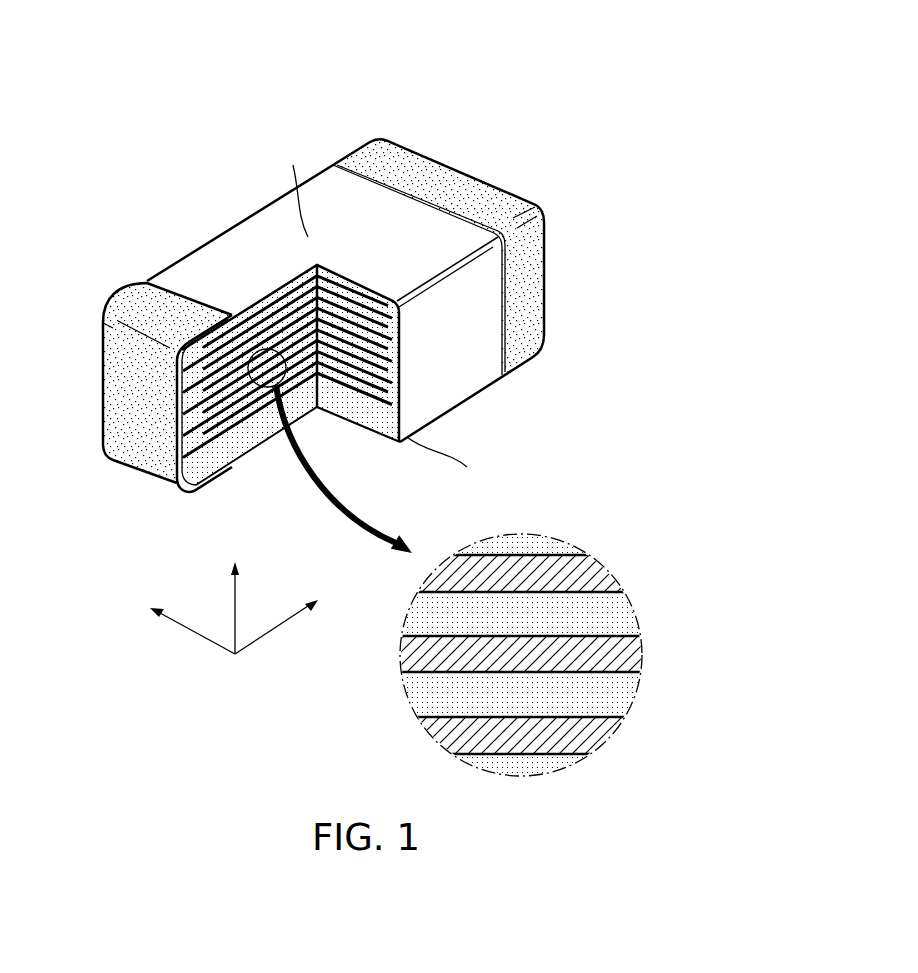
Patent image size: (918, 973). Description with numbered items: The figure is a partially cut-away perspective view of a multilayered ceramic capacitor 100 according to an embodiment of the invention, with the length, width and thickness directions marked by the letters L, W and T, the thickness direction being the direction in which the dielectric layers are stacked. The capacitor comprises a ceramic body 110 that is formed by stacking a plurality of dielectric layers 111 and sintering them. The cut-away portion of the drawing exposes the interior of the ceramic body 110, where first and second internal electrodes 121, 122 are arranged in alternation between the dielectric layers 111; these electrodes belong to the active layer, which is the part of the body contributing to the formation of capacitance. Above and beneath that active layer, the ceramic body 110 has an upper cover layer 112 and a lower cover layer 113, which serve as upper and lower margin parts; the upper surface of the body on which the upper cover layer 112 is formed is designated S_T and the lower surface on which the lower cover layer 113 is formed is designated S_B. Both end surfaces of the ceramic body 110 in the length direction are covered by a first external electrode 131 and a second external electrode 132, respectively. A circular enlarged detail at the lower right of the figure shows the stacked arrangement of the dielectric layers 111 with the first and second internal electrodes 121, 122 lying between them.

The multilayered ceramic capacitor 100 is at (352, 41).
The ceramic body 110 is at (197, 229).
The dielectric layer 111 is at (603, 610).
The upper cover layer 112 is at (280, 290).
The lower cover layer 113 is at (248, 438).
The first internal electrode 121 is at (390, 377).
The second internal electrode 122 is at (607, 657).
The first external electrode 131 is at (142, 308).
The second external electrode 132 is at (457, 178).